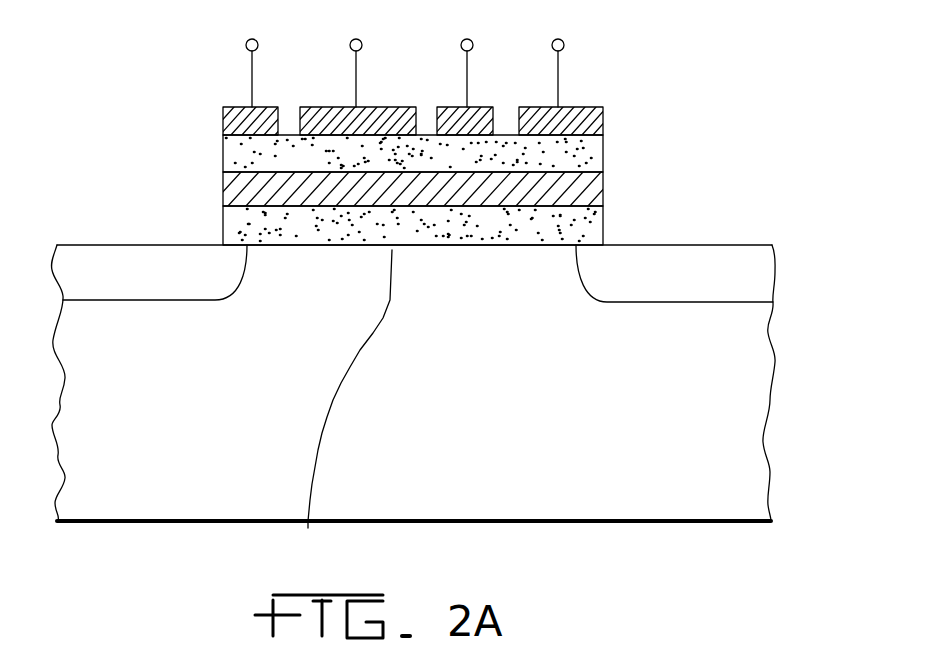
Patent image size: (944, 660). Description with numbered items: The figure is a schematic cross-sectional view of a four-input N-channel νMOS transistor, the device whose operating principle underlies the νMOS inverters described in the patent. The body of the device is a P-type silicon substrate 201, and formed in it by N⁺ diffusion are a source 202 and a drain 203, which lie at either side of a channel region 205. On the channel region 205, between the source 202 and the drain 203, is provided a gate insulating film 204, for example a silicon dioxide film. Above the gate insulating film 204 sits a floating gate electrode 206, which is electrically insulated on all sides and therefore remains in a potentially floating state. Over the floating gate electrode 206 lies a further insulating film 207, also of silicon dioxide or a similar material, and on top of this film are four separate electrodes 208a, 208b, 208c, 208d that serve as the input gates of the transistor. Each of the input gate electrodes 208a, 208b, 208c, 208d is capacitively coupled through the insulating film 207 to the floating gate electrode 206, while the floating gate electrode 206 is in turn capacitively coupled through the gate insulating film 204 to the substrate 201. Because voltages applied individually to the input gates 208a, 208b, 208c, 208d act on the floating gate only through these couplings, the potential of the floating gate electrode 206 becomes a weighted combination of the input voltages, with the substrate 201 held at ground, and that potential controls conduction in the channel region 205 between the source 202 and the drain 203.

The P-type silicon substrate 201 is at (602, 500).
The source 202 is at (88, 257).
The drain 203 is at (746, 262).
The gate insulating film 204 is at (595, 232).
The channel region 205 is at (337, 404).
The floating gate electrode 206 is at (598, 195).
The insulating film 207 is at (593, 163).
The input gate electrode 208a is at (252, 78).
The input gate electrode 208b is at (356, 78).
The input gate electrode 208c is at (467, 82).
The input gate electrode 208d is at (558, 78).